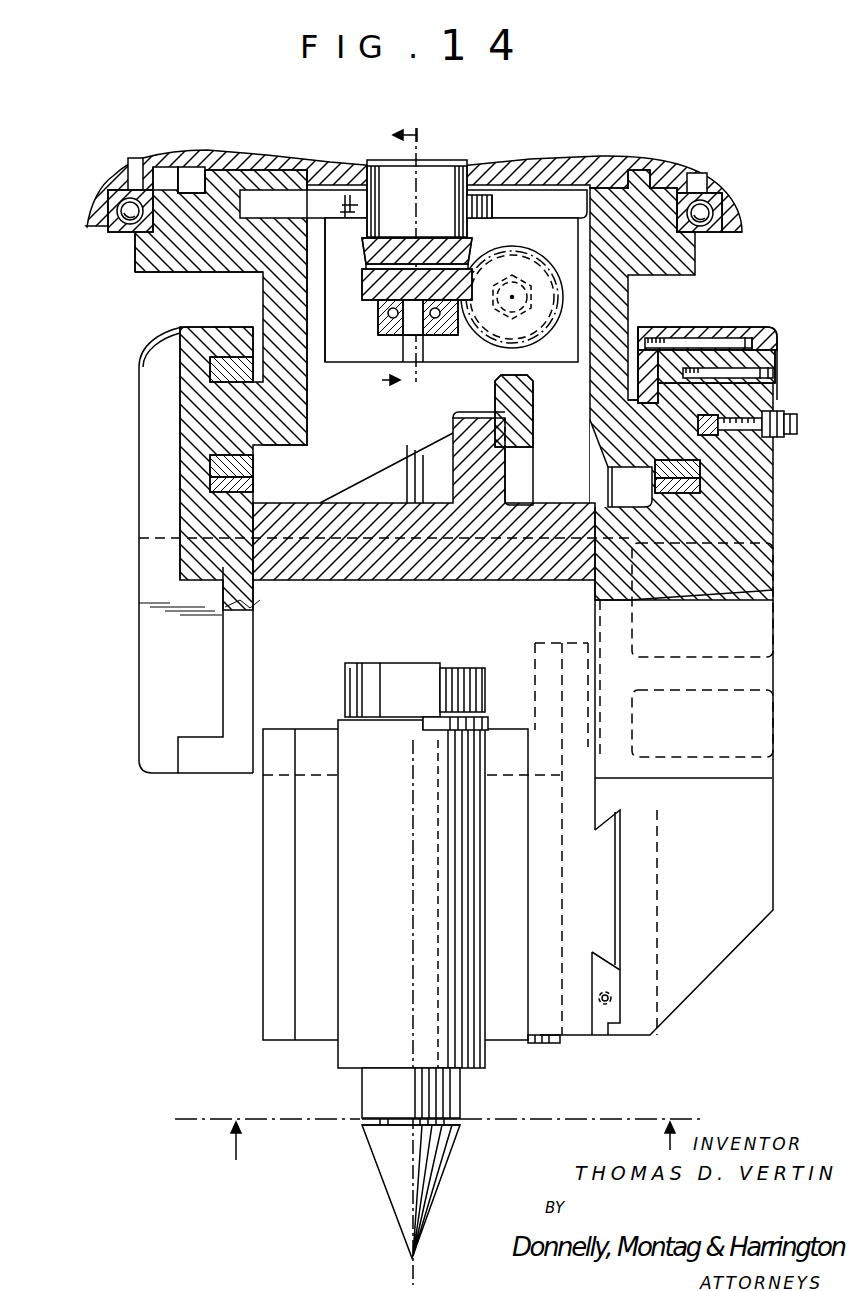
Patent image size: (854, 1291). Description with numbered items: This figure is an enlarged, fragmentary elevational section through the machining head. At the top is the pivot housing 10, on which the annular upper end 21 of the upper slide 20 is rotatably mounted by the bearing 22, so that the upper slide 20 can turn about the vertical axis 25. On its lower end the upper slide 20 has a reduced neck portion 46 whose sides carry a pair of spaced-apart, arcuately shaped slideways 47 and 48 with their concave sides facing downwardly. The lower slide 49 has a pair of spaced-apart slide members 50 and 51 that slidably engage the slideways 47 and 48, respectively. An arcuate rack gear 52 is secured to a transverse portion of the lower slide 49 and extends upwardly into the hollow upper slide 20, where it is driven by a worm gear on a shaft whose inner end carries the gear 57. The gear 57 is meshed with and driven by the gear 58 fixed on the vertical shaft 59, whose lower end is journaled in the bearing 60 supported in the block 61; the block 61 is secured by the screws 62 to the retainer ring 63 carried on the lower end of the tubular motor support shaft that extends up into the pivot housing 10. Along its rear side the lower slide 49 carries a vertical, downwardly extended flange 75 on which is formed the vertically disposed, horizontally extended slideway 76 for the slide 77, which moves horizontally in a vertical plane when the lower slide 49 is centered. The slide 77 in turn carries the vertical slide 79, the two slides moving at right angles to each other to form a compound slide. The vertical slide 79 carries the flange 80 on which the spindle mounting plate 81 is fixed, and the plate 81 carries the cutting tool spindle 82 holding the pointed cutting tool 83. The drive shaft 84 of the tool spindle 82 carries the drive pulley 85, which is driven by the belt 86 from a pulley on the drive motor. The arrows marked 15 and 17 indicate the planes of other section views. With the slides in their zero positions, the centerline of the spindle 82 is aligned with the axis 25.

The pivot housing 10 is at (96, 188).
The section line 15 is at (381, 258).
The section line 17 is at (437, 1141).
The upper slide 20 is at (220, 272).
The annular upper end 21 is at (134, 258).
The bearing 22 is at (100, 232).
The vertical axis 25 is at (412, 1180).
The reduced neck portion 46 is at (280, 300).
The slideway 47 is at (210, 418).
The slideway 48 is at (700, 405).
The lower slide 49 is at (139, 567).
The slide member 50 is at (210, 339).
The slide member 51 is at (742, 329).
The arcuate rack gear 52 is at (528, 407).
The gear 57 is at (540, 340).
The gear 58 is at (374, 283).
The vertical shaft 59 is at (420, 335).
The bearing 60 is at (395, 322).
The block 61 is at (562, 240).
The screws 62 is at (338, 198).
The retainer ring 63 is at (496, 207).
The flange 75 is at (655, 955).
The slideway 76 is at (622, 830).
The slide 77 is at (600, 887).
The vertical slide 79 is at (548, 1046).
The flange 80 is at (272, 837).
The spindle mounting plate 81 is at (312, 920).
The cutting tool spindle 82 is at (386, 918).
The pointed cutting tool 83 is at (440, 1167).
The drive shaft 84 is at (415, 666).
The drive pulley 85 is at (462, 668).
The belt 86 is at (482, 693).